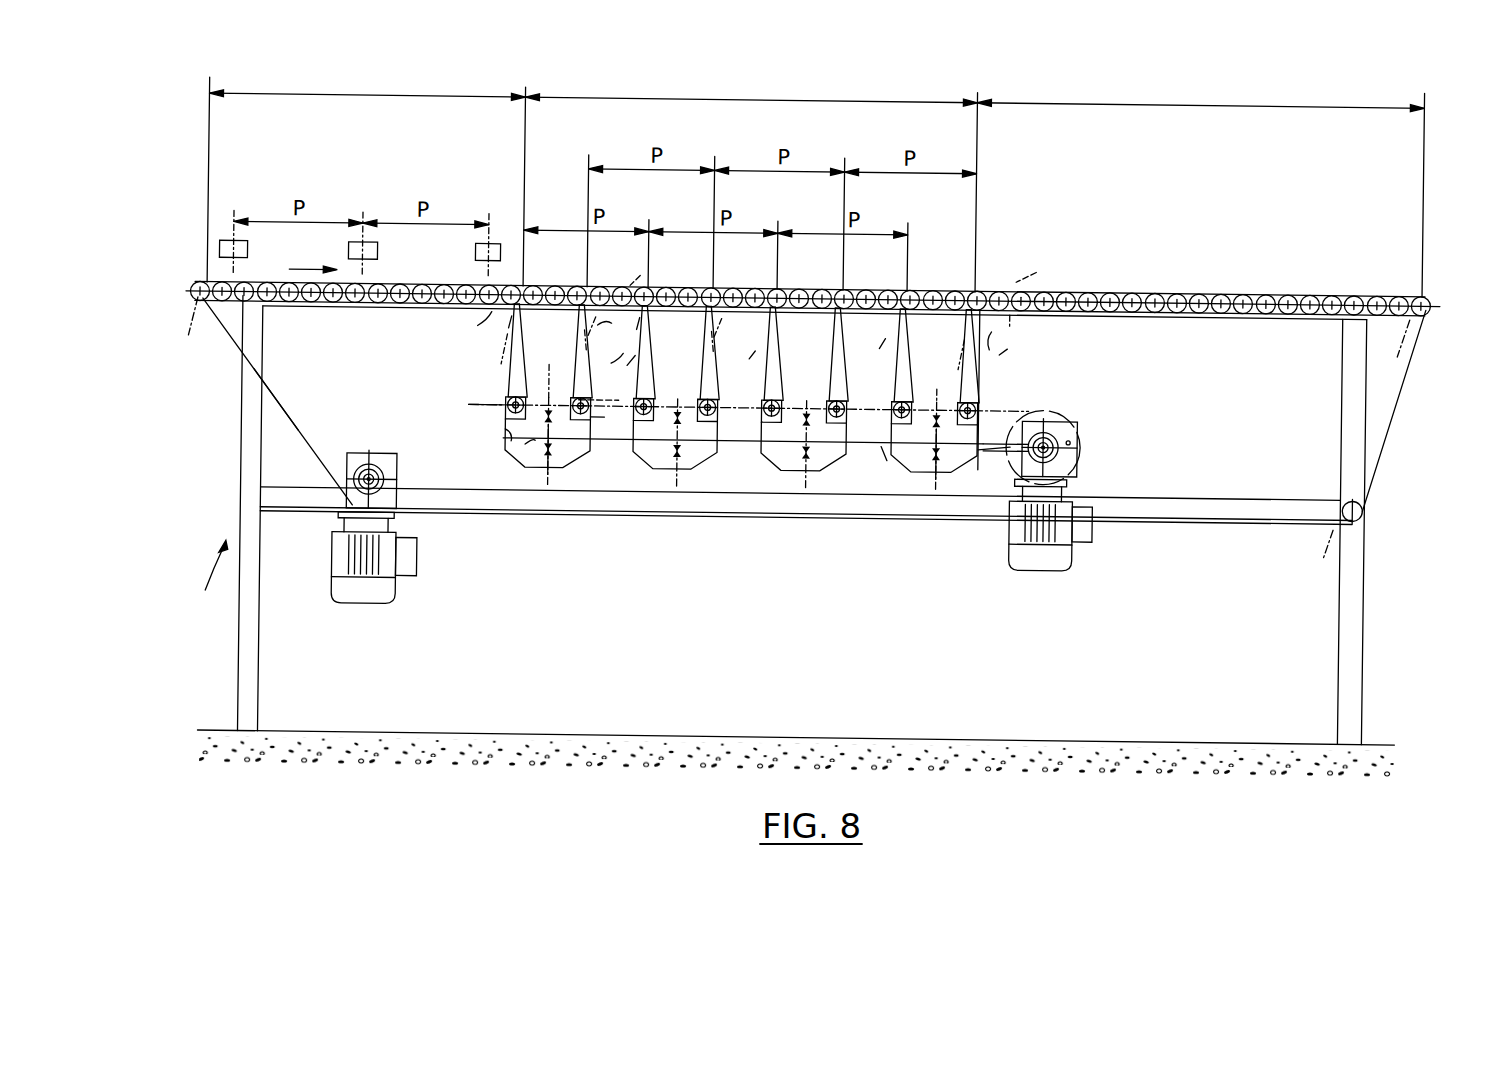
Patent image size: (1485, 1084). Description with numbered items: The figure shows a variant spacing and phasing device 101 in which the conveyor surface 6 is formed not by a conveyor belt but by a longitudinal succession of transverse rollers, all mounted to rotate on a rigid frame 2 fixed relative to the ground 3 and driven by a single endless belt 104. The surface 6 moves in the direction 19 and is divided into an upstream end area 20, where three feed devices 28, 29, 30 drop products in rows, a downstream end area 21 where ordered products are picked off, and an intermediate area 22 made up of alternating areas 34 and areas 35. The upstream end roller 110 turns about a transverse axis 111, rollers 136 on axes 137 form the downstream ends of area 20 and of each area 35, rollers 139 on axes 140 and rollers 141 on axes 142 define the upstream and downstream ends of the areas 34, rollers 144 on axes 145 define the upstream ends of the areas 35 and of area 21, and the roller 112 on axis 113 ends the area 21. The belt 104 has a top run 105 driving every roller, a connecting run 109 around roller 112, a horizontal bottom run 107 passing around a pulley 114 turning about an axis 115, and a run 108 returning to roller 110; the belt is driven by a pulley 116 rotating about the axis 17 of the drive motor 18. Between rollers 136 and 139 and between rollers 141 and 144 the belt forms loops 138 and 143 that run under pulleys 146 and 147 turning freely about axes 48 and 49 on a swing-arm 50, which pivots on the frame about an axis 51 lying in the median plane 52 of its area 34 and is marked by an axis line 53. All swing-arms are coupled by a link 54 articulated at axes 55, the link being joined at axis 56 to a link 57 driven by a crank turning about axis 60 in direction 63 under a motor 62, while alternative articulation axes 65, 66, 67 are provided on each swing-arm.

The rigid frame 2 is at (241, 652).
The ground 3 is at (404, 729).
The conveyor surface 6 is at (1109, 278).
The axis of the drive motor 17 is at (387, 446).
The drive motor 18 is at (398, 588).
The direction of movement 19 is at (302, 268).
The upstream end area 20 is at (366, 176).
The downstream end area 21 is at (1200, 187).
The area 22 is at (750, 181).
The feed device 28 is at (247, 250).
The feed device 29 is at (377, 250).
The feed device 30 is at (475, 249).
The area 34 is at (556, 280).
The area 35 is at (604, 280).
The horizontal axis 48 is at (498, 409).
The horizontal axis 49 is at (609, 395).
The swing-arm 50 is at (497, 458).
The horizontal axis 51 is at (561, 372).
The median transverse vertical plane 52 is at (551, 476).
The axis line 53 is at (469, 398).
The link 54 is at (610, 447).
The axis 55 is at (542, 458).
The axis 56 is at (988, 458).
The link 57 is at (1030, 428).
The axis 60 is at (1079, 463).
The motor 62 is at (1006, 560).
The direction of rotation 63 is at (1030, 389).
The articulation axis 65 is at (923, 382).
The articulation axis 66 is at (890, 452).
The articulation axis 67 is at (935, 484).
The device 101 is at (199, 576).
The endless belt 104 is at (236, 350).
The top run 105 is at (1163, 278).
The bottom run 107 is at (1169, 516).
The run 108 is at (278, 397).
The connecting run 109 is at (1400, 395).
The roller 110 is at (195, 280).
The transverse horizontal axis 111 is at (195, 329).
The roller 112 is at (1433, 282).
The transverse horizontal axis 113 is at (1387, 352).
The pulley 114 is at (1366, 502).
The axis 115 is at (1310, 564).
The pulley 116 is at (343, 466).
The rollers 136 is at (534, 337).
The transverse horizontal axes 137 is at (495, 347).
The loop 138 is at (508, 384).
The rollers 139 is at (746, 367).
The transverse horizontal axes 140 is at (524, 278).
The rollers 141 is at (996, 244).
The transverse horizontal axes 142 is at (588, 280).
The loop 143 is at (819, 357).
The rollers 144 is at (811, 335).
The transverse horizontal axes 145 is at (843, 264).
The pulley 146 is at (507, 441).
The pulley 147 is at (613, 418).